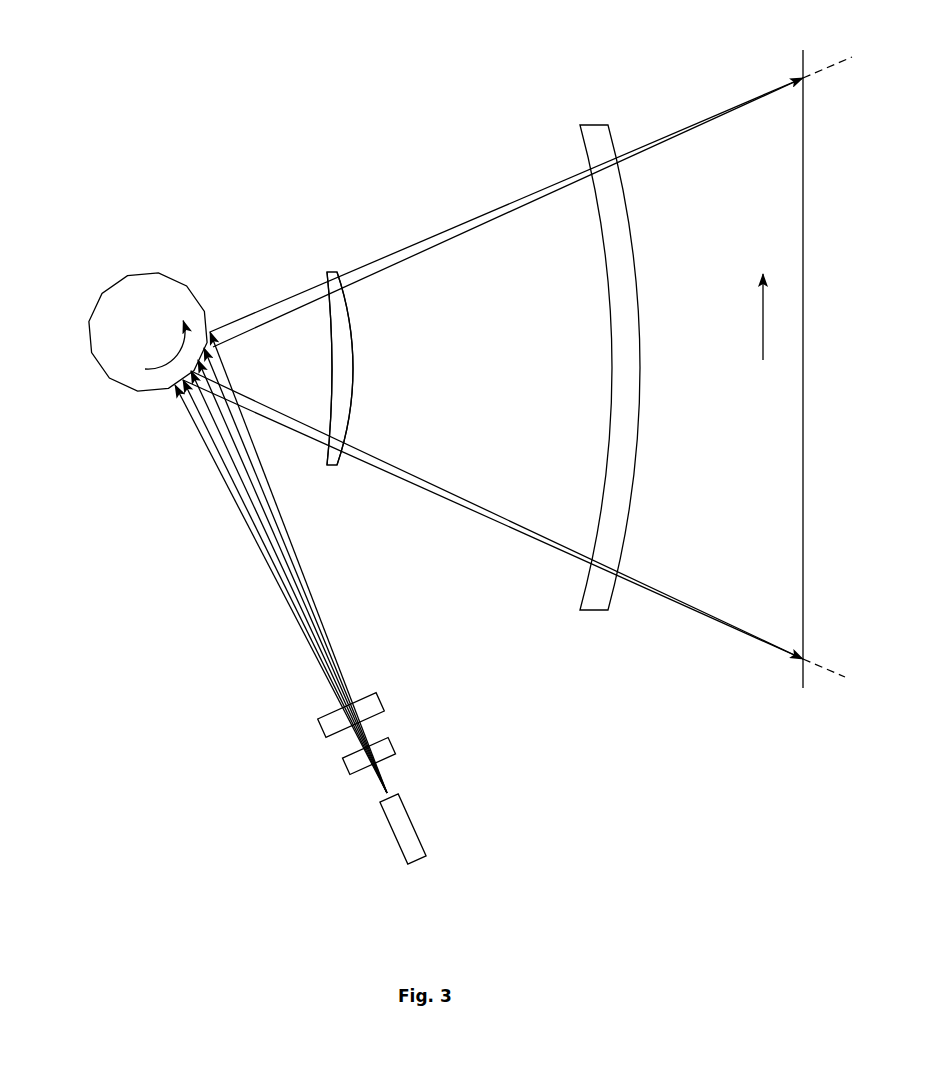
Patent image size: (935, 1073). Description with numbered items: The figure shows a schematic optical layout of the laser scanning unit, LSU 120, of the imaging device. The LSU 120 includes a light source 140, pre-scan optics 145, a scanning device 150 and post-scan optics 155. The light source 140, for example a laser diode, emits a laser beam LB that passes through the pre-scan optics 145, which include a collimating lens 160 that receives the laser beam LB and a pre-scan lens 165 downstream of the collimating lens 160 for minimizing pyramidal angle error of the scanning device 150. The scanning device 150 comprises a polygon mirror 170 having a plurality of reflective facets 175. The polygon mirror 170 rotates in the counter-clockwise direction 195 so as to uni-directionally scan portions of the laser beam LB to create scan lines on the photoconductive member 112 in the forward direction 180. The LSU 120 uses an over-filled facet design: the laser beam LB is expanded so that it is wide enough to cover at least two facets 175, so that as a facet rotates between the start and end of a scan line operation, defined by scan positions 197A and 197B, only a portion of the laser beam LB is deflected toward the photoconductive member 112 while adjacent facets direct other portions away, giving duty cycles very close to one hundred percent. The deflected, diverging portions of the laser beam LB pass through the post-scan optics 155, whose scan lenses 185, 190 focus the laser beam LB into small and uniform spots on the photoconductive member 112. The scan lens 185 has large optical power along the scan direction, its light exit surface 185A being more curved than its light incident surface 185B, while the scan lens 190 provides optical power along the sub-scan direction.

The laser scanning unit 120 is at (157, 64).
The scanning device 150 is at (69, 374).
The polygon mirror 170 is at (146, 304).
The facets 175 is at (138, 272).
The counter-clockwise direction 195 is at (153, 370).
The pre-scan optics 145 is at (297, 764).
The light source 140 is at (417, 838).
The collimating lens 160 is at (392, 745).
The pre-scan lens 165 is at (383, 700).
The laser beam LB is at (387, 782).
The post-scan optics 155 is at (506, 594).
The scan lens 185 is at (333, 271).
The light exit surface 185A is at (353, 398).
The light incident surface 185B is at (328, 372).
The scan lens 190 is at (640, 385).
The forward direction 180 is at (763, 325).
The photoconductive member 112 is at (803, 677).
The scan position 197A is at (845, 677).
The scan position 197B is at (843, 60).